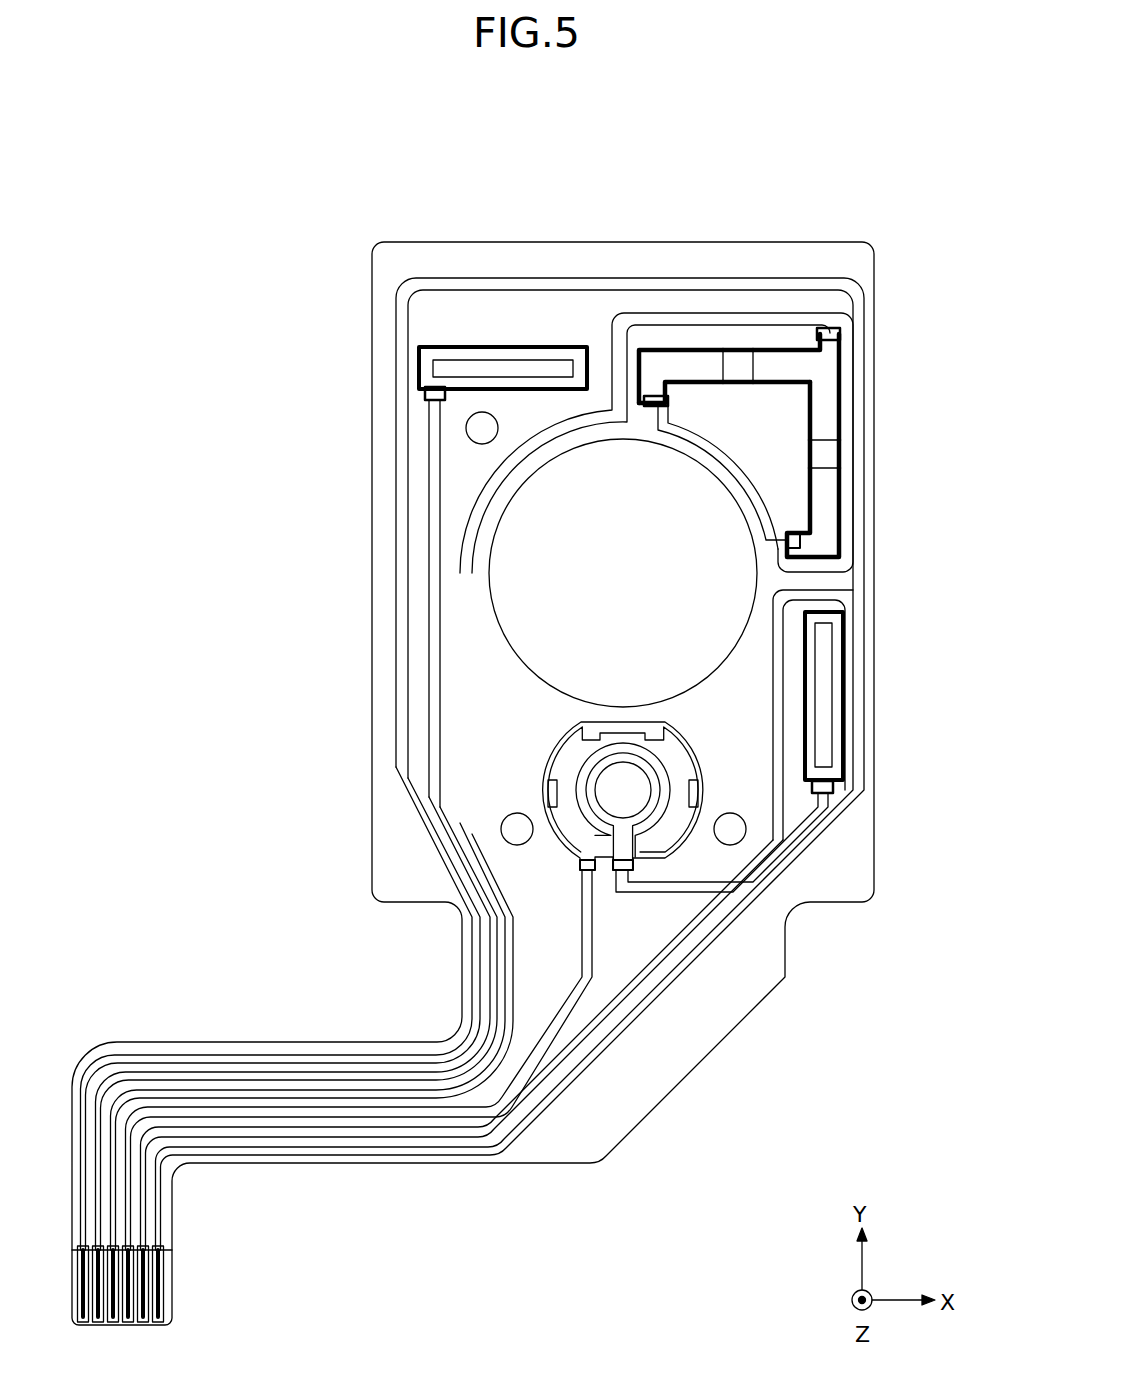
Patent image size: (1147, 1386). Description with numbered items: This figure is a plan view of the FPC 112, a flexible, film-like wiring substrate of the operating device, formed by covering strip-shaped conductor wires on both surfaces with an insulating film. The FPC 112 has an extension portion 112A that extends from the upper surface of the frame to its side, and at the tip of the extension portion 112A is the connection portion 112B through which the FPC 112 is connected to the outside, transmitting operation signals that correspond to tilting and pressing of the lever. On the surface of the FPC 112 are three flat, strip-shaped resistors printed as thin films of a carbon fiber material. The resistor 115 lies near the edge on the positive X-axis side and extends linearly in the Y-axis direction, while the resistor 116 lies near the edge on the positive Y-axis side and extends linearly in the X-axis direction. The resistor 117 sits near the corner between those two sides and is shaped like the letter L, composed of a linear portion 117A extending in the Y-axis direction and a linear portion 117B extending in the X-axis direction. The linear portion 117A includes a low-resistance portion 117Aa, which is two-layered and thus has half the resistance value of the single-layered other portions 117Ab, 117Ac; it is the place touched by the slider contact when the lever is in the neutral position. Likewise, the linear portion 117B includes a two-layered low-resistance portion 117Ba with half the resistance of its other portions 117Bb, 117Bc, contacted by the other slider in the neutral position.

The FPC 112 is at (962, 126).
The extension portion 112A is at (325, 1165).
The connection portion 112B is at (184, 1283).
The resistor 115 is at (826, 680).
The resistor 116 is at (532, 362).
The resistor 117 is at (788, 352).
The linear portion 117A is at (888, 445).
The low-resistance portion 117Aa is at (825, 456).
The other portion 117Ab is at (822, 519).
The other portion 117Ac is at (825, 413).
The linear portion 117B is at (727, 276).
The low-resistance portion 117Ba is at (737, 365).
The other portion 117Bb is at (672, 365).
The other portion 117Bc is at (765, 365).